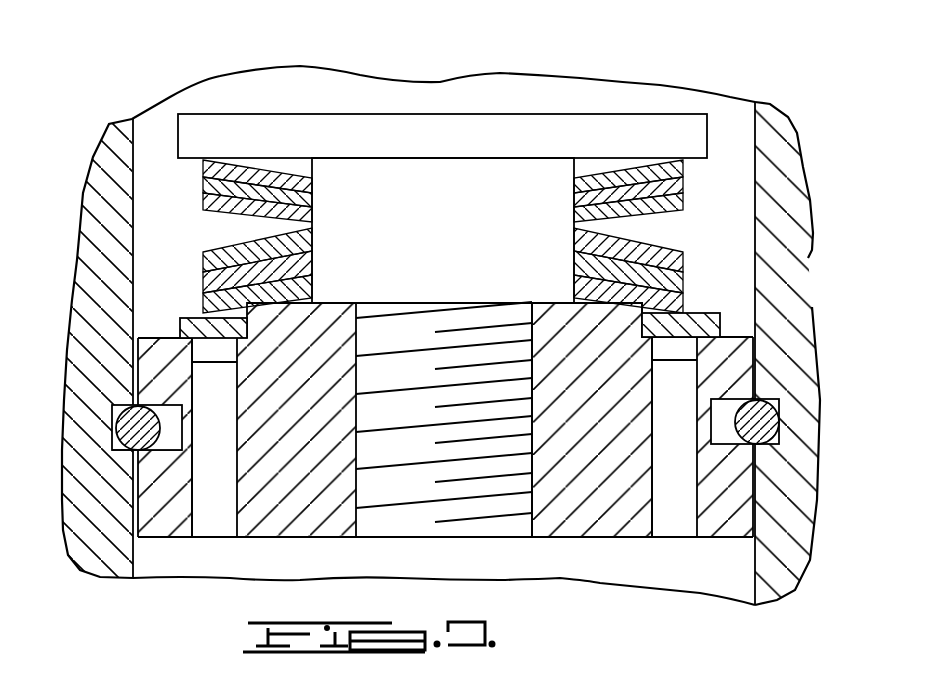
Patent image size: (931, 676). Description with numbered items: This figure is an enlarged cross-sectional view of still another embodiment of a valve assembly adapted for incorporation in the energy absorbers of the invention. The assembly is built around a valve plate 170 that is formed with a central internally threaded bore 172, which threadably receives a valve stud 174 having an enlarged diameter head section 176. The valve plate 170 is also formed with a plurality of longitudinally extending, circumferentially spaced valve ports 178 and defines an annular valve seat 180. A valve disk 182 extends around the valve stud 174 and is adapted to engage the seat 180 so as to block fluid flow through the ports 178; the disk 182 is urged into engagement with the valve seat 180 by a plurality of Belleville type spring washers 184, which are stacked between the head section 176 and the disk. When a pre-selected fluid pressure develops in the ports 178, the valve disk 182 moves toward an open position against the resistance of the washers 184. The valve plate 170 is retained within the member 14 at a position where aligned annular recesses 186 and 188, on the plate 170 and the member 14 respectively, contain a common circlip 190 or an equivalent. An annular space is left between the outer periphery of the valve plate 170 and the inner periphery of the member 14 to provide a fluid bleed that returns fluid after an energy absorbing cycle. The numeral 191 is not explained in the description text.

The member 14 is at (802, 345).
The valve plate 170 is at (627, 527).
The central internally threaded bore 172 is at (528, 531).
The valve stud 174 is at (427, 527).
The enlarged diameter head section 176 is at (286, 128).
The valve ports 178 is at (227, 545).
The annular valve seat 180 is at (736, 324).
The valve disk 182 is at (722, 317).
The Belleville type spring washers 184 is at (698, 298).
The annular recess 186 is at (137, 450).
The annular recess 188 is at (113, 418).
The circlip 190 is at (118, 446).
The sleeve 191 is at (138, 343).